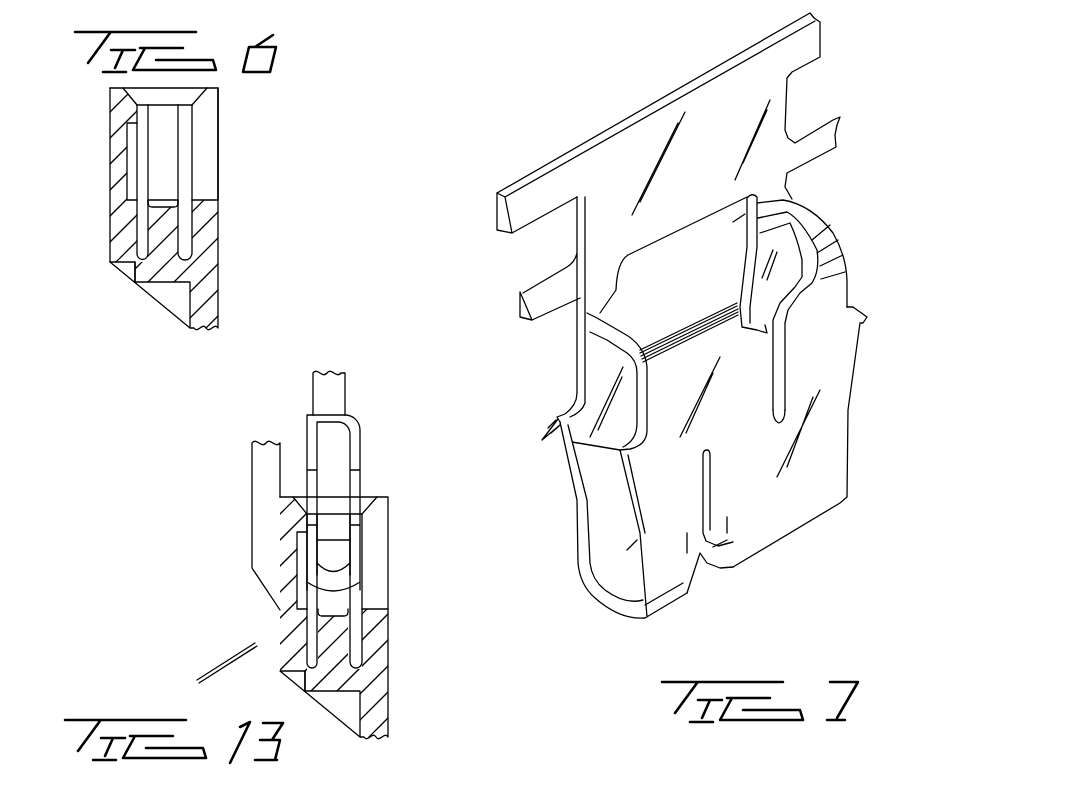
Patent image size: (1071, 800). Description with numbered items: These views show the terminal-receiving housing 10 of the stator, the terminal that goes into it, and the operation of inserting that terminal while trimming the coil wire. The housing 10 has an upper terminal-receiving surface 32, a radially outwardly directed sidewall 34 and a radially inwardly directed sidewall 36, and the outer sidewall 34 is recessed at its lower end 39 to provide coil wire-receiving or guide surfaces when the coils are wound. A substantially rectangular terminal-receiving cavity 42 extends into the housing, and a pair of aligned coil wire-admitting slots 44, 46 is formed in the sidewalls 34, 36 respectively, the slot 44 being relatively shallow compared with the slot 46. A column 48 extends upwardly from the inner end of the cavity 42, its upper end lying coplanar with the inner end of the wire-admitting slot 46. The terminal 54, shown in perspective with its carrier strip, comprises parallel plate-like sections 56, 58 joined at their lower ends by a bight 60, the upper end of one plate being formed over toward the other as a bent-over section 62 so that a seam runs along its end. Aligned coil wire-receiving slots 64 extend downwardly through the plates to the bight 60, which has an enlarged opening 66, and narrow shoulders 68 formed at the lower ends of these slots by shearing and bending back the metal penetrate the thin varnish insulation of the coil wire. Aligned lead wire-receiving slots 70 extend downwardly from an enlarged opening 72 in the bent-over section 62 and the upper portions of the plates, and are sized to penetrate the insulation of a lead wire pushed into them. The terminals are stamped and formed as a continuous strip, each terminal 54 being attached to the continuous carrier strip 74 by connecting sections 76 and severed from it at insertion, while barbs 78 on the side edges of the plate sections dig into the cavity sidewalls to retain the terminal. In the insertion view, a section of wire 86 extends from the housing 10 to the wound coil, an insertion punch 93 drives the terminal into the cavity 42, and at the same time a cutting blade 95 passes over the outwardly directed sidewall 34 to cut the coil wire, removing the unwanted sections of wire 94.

In FIG. 6, the housing 10 is at (226, 141).
In FIG. 13, the housing 10 is at (399, 591).
In FIG. 6, the upper terminal-receiving surface 32 is at (123, 90).
In FIG. 6, the radially outwardly directed sidewall 34 is at (110, 217).
In FIG. 13, the radially outwardly directed sidewall 34 is at (277, 645).
In FIG. 6, the radially inwardly directed sidewall 36 is at (218, 218).
In FIG. 13, the radially inwardly directed sidewall 36 is at (388, 648).
In FIG. 6, the recessed lower end 39 is at (127, 270).
In FIG. 13, the recessed lower end 39 is at (290, 680).
In FIG. 6, the terminal-receiving cavity 42 is at (174, 157).
In FIG. 6, the coil wire-admitting slot 44 is at (117, 127).
In FIG. 6, the coil wire-admitting slot 46 is at (207, 163).
In FIG. 6, the column 48 is at (165, 236).
In FIG. 13, the column 48 is at (343, 623).
In FIG. 13, the terminal 54 is at (366, 477).
In FIG. 7, the terminal 54 is at (538, 342).
In FIG. 7, the plate-like section 56 is at (640, 560).
In FIG. 7, the plate-like section 58 is at (607, 518).
In FIG. 7, the bight 60 is at (620, 600).
In FIG. 7, the bent-over section 62 is at (665, 278).
In FIG. 7, the coil wire-receiving slot 64 is at (702, 483).
In FIG. 7, the enlarged opening 66 is at (707, 570).
In FIG. 7, the narrow shoulder 68 is at (720, 533).
In FIG. 7, the lead wire-receiving slot 70 is at (778, 380).
In FIG. 7, the enlarged opening 72 is at (798, 183).
In FIG. 7, the carrier strip 74 is at (677, 107).
In FIG. 7, the connecting section 76 is at (575, 325).
In FIG. 7, the barb 78 is at (863, 328).
In FIG. 13, the section of wire 86 is at (290, 542).
In FIG. 13, the insertion punch 93 is at (335, 397).
In FIG. 13, the section of wire 94 is at (230, 662).
In FIG. 13, the cutting blade 95 is at (260, 488).